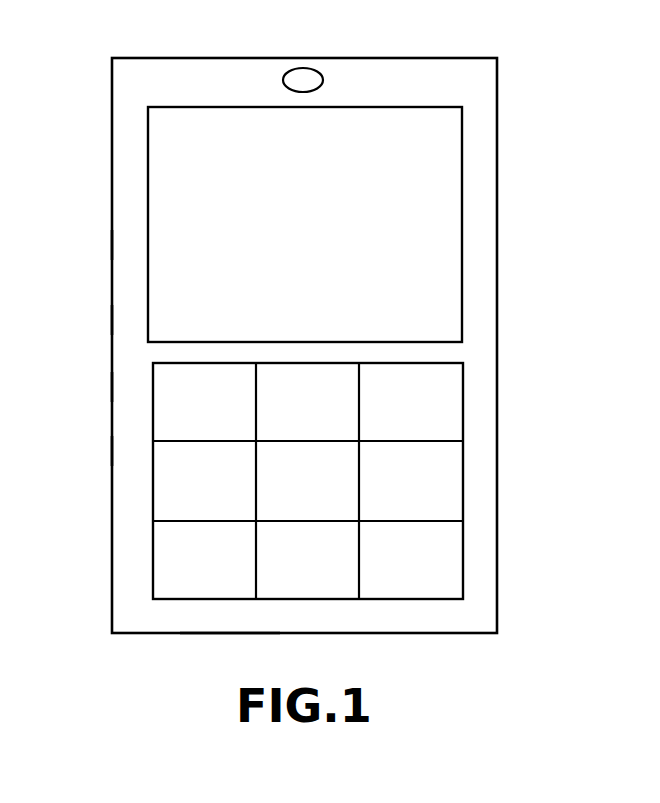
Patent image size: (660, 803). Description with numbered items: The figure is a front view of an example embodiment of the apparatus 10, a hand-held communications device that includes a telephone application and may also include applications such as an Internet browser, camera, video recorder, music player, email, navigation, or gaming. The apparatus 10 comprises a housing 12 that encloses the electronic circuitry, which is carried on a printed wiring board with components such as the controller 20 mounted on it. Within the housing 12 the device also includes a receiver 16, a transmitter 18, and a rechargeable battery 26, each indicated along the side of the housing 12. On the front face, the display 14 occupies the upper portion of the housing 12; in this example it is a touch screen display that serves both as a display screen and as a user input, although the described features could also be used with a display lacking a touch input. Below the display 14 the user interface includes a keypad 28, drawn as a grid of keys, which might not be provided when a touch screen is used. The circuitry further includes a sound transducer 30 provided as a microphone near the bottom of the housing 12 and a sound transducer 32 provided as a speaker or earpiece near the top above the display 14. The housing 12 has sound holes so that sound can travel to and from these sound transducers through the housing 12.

The apparatus 10 is at (540, 48).
The housing 12 is at (110, 185).
The display 14 is at (452, 236).
The receiver 16 is at (110, 248).
The transmitter 18 is at (110, 320).
The controller 20 is at (110, 388).
The rechargeable battery 26 is at (110, 451).
The keypad 28 is at (449, 468).
The sound transducer 30 is at (225, 634).
The sound transducer 32 is at (302, 76).